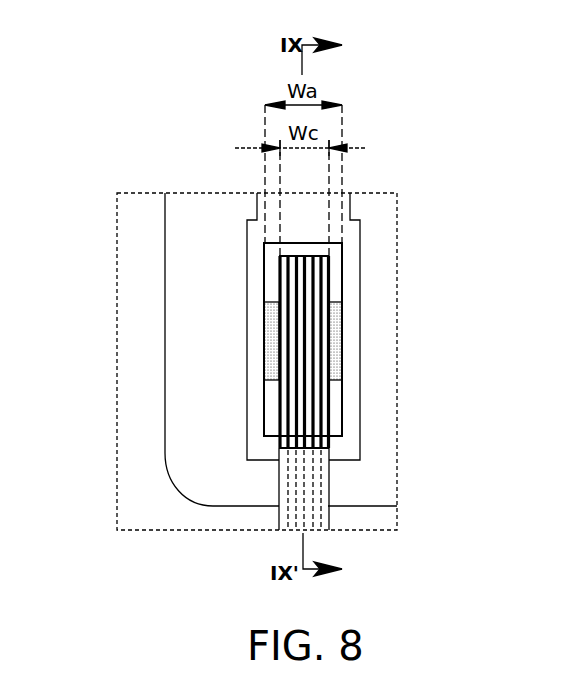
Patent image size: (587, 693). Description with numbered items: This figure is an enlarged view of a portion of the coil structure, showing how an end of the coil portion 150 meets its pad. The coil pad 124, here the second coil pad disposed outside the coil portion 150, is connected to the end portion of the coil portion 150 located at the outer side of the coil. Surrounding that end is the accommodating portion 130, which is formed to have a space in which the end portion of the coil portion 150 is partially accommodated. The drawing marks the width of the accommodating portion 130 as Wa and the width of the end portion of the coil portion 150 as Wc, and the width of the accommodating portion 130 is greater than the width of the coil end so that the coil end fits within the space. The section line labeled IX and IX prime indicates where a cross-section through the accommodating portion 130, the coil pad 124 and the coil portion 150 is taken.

The accommodating portion 130 is at (273, 271).
The coil pad 124 is at (333, 332).
The coil portion 150 is at (317, 482).